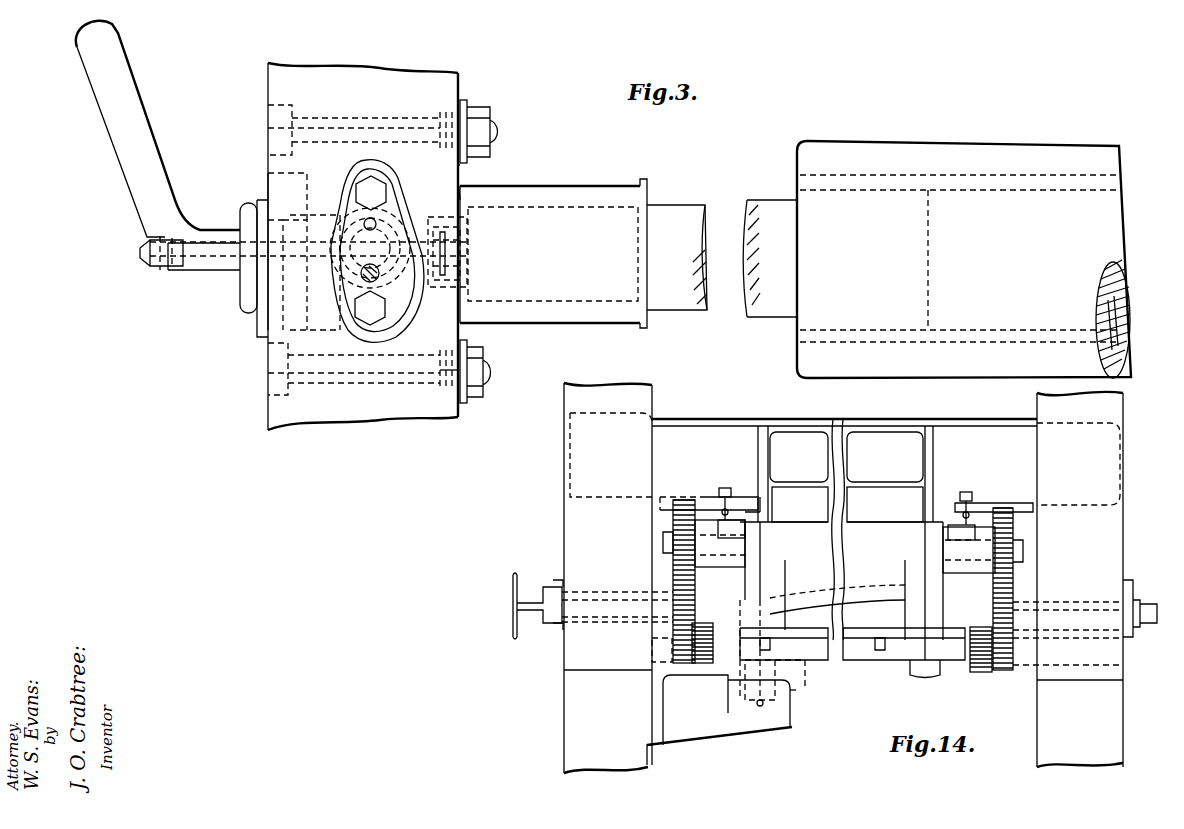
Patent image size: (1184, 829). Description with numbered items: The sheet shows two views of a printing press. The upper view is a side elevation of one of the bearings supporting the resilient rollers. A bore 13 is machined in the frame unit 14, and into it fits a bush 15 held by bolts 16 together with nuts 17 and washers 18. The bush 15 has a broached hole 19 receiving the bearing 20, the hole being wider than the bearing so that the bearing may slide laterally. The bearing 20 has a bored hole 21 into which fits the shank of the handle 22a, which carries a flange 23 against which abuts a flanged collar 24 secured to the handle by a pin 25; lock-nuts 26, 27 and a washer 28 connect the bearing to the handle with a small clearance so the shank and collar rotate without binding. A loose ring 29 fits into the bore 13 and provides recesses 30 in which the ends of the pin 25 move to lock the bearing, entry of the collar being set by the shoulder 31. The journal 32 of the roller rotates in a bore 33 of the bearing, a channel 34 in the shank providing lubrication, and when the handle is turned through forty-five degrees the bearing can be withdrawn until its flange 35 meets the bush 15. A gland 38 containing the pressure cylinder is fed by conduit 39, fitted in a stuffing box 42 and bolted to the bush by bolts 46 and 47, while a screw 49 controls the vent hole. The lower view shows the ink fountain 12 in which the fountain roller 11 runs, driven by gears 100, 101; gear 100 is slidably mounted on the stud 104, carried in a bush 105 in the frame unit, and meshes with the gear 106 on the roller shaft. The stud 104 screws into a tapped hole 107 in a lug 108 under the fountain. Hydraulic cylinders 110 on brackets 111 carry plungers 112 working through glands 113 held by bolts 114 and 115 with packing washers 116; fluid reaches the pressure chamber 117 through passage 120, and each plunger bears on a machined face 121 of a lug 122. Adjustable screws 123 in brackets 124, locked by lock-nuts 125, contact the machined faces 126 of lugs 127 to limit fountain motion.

In FIG. 3, the handle 22a is at (112, 95).
In FIG. 3, the channel 34 is at (196, 250).
In FIG. 3, the flange 23 is at (252, 278).
In FIG. 3, the collar 24 is at (262, 300).
In FIG. 3, the loose ring 29 is at (282, 330).
In FIG. 3, the shoulder or flange 31 is at (267, 207).
In FIG. 3, the recesses 30 is at (292, 180).
In FIG. 3, the pin 25 is at (290, 197).
In FIG. 3, the frame unit 14 is at (430, 97).
In FIG. 14, the frame unit 14 is at (575, 745).
In FIG. 3, the bolts 16 is at (280, 117).
In FIG. 3, the bush 15 is at (433, 160).
In FIG. 3, the broached hole 19 is at (455, 182).
In FIG. 3, the washer 28 is at (456, 198).
In FIG. 3, the washers 18 is at (470, 348).
In FIG. 3, the nuts 17 is at (478, 355).
In FIG. 3, the bore 13 is at (438, 378).
In FIG. 3, the gland 38 is at (384, 178).
In FIG. 3, the bolt 47 is at (372, 193).
In FIG. 3, the bolt 46 is at (373, 308).
In FIG. 3, the screw 49 is at (374, 225).
In FIG. 3, the conduit 39 is at (380, 280).
In FIG. 3, the stuffing box 42 is at (371, 340).
In FIG. 3, the lock-nut 27 is at (470, 240).
In FIG. 3, the lock-nut 26 is at (472, 262).
In FIG. 3, the bored hole 21 is at (470, 287).
In FIG. 3, the bearing 20 is at (562, 186).
In FIG. 3, the bore 33 is at (605, 208).
In FIG. 3, the flange 35 is at (648, 184).
In FIG. 3, the journal 32 is at (628, 225).
In FIG. 14, the fountain roller 11 is at (797, 478).
In FIG. 14, the ink fountain 12 is at (815, 522).
In FIG. 14, the gear 100 is at (675, 575).
In FIG. 14, the gear 101 is at (672, 664).
In FIG. 14, the gear 106 is at (695, 522).
In FIG. 14, the lugs 127 is at (730, 522).
In FIG. 14, the brackets 124 is at (660, 497).
In FIG. 14, the adjustable screws 123 is at (724, 488).
In FIG. 14, the lock-nuts 125 is at (718, 502).
In FIG. 14, the machined faces 126 is at (955, 525).
In FIG. 14, the bush 105 is at (566, 571).
In FIG. 14, the stud or spindle 104 is at (755, 583).
In FIG. 14, the tapped hole 107 is at (770, 598).
In FIG. 14, the lug 108 is at (770, 614).
In FIG. 14, the machined face 121 is at (793, 642).
In FIG. 14, the plunger 112 is at (788, 650).
In FIG. 14, the hydraulic cylinders 110 is at (748, 718).
In FIG. 14, the brackets 111 is at (662, 750).
In FIG. 14, the bolt 114 is at (735, 668).
In FIG. 14, the packing washer 116 is at (740, 700).
In FIG. 14, the pressure chamber 117 is at (745, 715).
In FIG. 14, the passage 120 is at (762, 708).
In FIG. 14, the bolt 115 is at (792, 680).
In FIG. 14, the gland 113 is at (780, 700).
In FIG. 14, the lug 122 is at (652, 645).